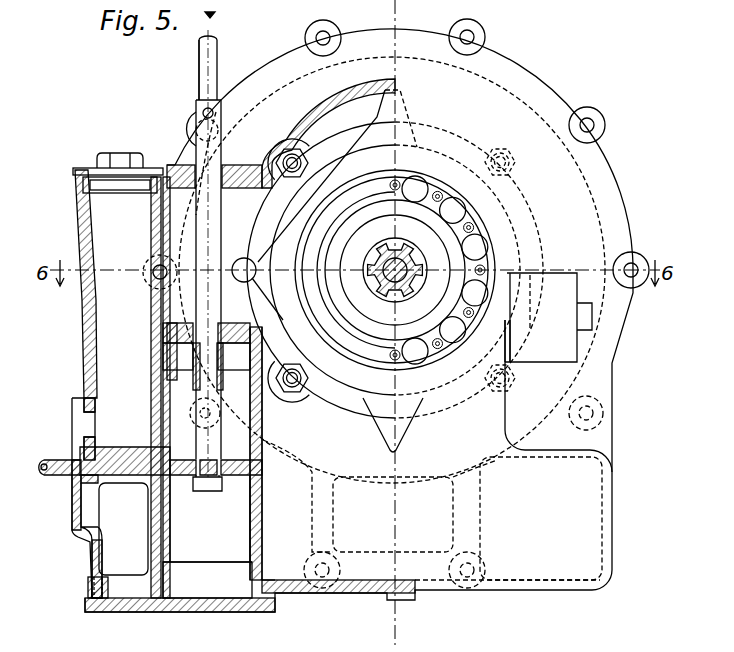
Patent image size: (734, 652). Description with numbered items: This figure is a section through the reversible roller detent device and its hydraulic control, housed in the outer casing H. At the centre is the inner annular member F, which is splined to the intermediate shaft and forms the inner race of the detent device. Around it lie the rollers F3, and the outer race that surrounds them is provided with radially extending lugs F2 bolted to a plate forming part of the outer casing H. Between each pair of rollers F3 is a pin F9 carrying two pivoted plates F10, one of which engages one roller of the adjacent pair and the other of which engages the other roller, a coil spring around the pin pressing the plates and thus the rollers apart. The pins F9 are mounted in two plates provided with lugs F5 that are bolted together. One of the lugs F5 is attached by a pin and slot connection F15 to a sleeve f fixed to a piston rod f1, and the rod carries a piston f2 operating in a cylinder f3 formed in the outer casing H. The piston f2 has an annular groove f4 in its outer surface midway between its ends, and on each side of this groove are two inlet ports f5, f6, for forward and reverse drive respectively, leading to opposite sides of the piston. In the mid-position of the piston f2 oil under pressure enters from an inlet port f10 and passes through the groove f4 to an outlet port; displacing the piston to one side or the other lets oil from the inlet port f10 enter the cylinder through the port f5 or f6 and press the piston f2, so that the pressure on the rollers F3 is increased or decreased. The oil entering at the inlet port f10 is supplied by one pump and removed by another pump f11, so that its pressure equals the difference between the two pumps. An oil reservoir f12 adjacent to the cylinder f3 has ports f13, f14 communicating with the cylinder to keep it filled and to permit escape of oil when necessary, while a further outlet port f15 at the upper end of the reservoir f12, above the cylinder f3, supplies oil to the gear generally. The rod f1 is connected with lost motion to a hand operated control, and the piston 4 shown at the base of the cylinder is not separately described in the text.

The outer casing H is at (335, 586).
The radially extending lugs F2 is at (305, 395).
The rollers F3 is at (470, 225).
The pin F9 is at (455, 200).
The pivoted plates F10 is at (498, 272).
The inner annular member F is at (442, 320).
The lugs F5 is at (338, 195).
The pin and slot connection F15 is at (243, 284).
The sleeve f is at (195, 100).
The piston rod f1 is at (200, 62).
The piston 4 is at (210, 40).
The oil reservoir f12 is at (121, 375).
The outlet port f15 is at (158, 224).
The port f13 is at (160, 418).
The inlet port f6 is at (162, 452).
The inlet port f10 is at (120, 477).
The port f14 is at (160, 505).
The inlet port f5 is at (175, 495).
The annular groove f4 is at (235, 480).
The piston f2 is at (263, 542).
The cylinder f3 is at (263, 566).
The pump f11 is at (530, 300).